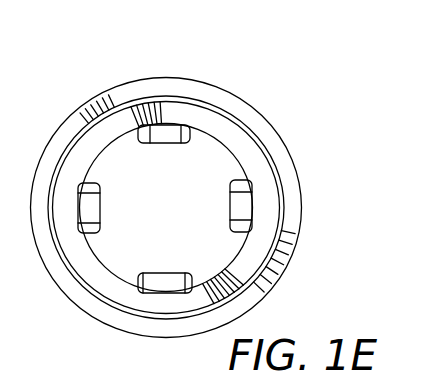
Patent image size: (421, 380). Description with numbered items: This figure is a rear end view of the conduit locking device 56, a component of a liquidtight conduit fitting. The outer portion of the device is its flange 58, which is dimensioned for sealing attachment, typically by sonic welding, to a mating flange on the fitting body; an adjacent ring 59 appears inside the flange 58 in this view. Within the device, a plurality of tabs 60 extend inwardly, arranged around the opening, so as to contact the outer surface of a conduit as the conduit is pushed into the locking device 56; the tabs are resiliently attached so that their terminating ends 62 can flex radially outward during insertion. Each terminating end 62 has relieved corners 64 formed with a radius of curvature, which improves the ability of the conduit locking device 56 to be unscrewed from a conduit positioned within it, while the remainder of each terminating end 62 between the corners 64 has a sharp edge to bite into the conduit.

The conduit locking device 56 is at (52, 117).
The flange 58 is at (247, 113).
The inner race ring 59 is at (273, 160).
The tabs 60 is at (165, 132).
The terminating ends 62 is at (168, 144).
The relieved corners 64 is at (139, 273).